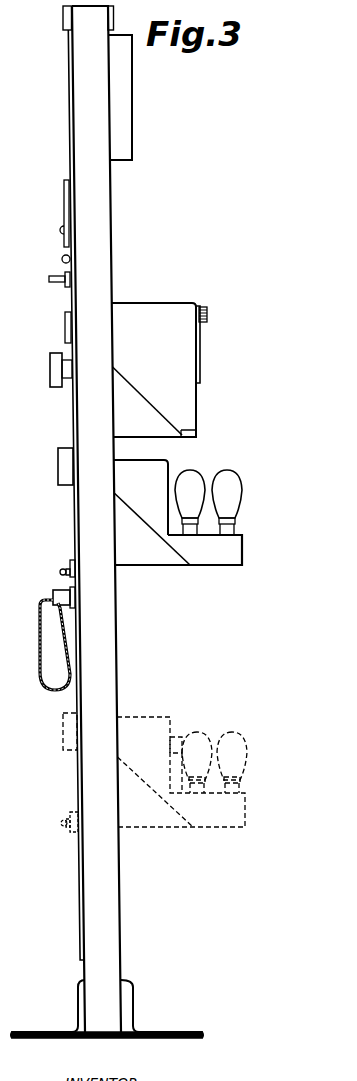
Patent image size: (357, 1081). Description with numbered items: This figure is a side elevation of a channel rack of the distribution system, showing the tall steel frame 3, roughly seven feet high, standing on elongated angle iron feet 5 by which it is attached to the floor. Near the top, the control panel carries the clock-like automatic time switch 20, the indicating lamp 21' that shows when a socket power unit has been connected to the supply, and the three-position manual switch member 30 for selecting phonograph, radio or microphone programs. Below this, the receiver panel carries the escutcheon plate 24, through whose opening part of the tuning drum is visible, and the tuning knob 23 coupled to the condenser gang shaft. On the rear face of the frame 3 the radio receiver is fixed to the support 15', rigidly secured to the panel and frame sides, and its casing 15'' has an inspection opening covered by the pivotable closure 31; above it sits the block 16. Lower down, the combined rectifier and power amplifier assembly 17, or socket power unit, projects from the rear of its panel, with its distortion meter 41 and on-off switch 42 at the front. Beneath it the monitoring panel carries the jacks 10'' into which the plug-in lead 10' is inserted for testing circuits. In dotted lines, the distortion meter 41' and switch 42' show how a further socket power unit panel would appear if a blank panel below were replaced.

The frame 3 is at (111, 258).
The angle iron feet 5 is at (77, 1003).
The top block 16 is at (128, 140).
The automatic time switch 20 is at (64, 213).
The indicating lamp 21' is at (41, 264).
The manual switch member 30 is at (48, 281).
The escutcheon plate 24 is at (64, 321).
The tuning knob 23 is at (50, 374).
The support 15' is at (178, 370).
The casing 15'' is at (194, 327).
The pivotable closure 31 is at (201, 343).
The distortion meter 41 is at (51, 466).
The combined rectifier and power amplifier assembly 17 is at (178, 533).
The on-off switch 42 is at (53, 566).
The jacks 10'' is at (50, 592).
The plug-in lead 10' is at (35, 648).
The distortion meters (dotted) 41' is at (57, 733).
The switches (dotted) 42' is at (58, 822).